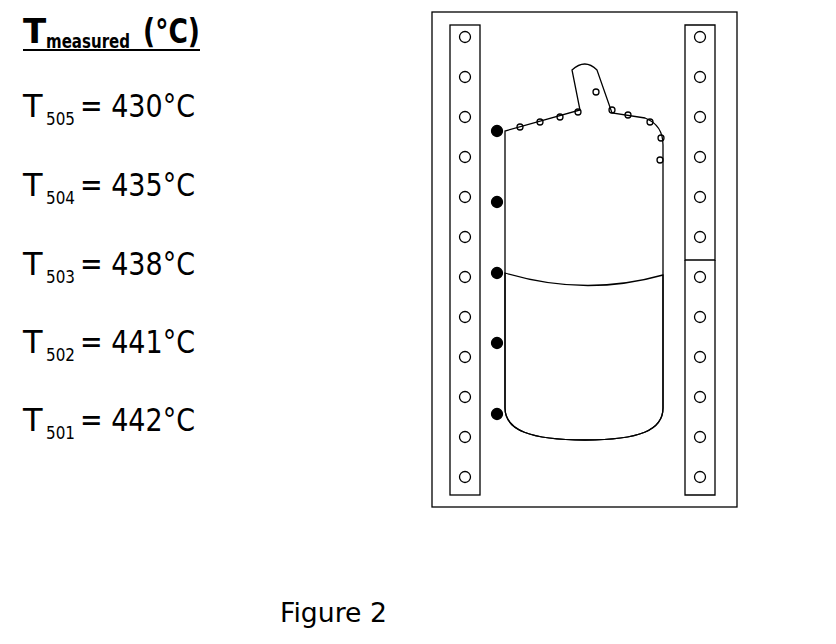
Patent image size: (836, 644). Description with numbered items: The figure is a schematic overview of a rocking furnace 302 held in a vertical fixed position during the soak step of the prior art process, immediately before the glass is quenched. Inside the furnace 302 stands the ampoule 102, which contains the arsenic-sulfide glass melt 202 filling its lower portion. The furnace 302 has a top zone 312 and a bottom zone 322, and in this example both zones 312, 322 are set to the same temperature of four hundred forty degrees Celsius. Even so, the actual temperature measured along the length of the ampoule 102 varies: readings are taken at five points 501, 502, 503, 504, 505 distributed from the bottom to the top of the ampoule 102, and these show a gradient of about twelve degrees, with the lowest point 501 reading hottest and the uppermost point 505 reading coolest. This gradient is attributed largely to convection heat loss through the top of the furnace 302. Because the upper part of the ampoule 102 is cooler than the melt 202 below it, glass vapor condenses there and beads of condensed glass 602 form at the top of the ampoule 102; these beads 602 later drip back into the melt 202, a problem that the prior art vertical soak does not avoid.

The ampoule 102 is at (663, 215).
The glass melt 202 is at (617, 362).
The rocking furnace 302 is at (737, 175).
The top zone 312 is at (697, 137).
The bottom zone 322 is at (703, 410).
The measured temperature point 501 is at (497, 414).
The measured temperature point 502 is at (497, 343).
The measured temperature point 503 is at (497, 273).
The measured temperature point 504 is at (497, 202).
The measured temperature point 505 is at (497, 131).
The beads of condensed glass 602 is at (632, 113).